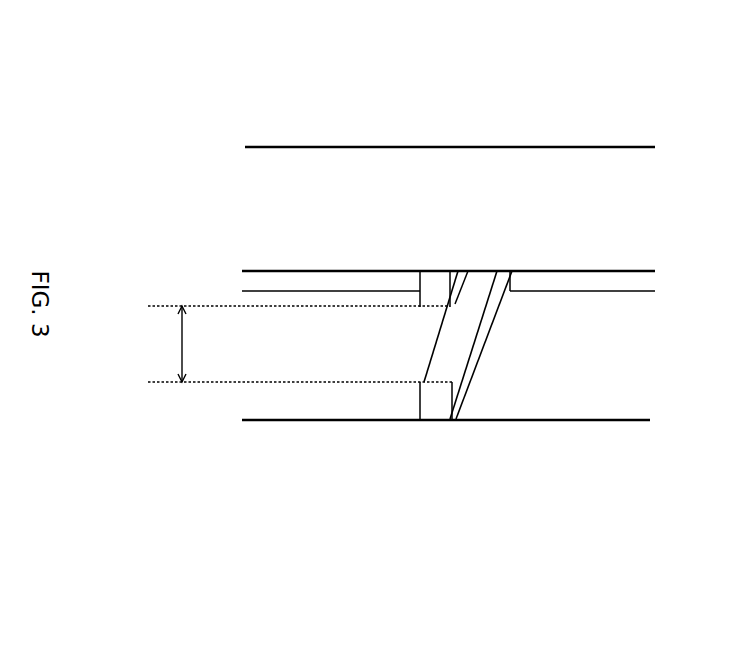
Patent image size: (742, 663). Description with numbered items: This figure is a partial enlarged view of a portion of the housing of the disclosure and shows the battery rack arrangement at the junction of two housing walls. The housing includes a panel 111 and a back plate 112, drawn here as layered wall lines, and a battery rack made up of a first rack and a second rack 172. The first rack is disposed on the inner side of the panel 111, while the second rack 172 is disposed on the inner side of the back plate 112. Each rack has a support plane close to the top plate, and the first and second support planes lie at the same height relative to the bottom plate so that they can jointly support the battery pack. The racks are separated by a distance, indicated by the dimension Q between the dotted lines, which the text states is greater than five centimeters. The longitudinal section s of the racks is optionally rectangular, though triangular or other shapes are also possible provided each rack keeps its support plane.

The panel 111 is at (587, 197).
The back plate 112 is at (484, 476).
The second rack 172 is at (450, 289).
The longitudinal section S is at (327, 464).
The distance Q is at (198, 344).